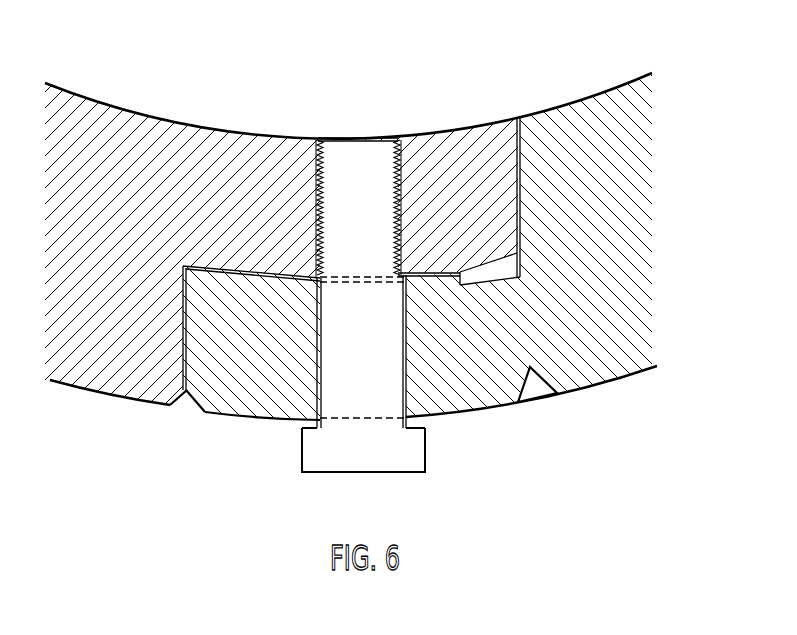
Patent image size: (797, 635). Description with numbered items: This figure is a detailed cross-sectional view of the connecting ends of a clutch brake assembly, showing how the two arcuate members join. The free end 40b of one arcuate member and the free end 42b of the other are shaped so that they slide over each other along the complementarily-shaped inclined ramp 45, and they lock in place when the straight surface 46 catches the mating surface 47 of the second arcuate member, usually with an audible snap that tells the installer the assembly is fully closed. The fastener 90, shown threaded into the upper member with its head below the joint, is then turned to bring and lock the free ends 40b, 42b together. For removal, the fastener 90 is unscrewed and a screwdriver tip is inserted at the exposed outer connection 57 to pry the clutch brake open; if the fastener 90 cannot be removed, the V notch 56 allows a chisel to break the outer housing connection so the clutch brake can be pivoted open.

The free end of arcuate member 40b is at (433, 150).
The free end of arcuate member 42b is at (230, 398).
The ramp 45 is at (458, 280).
The straight surface 46 is at (463, 273).
The surface 47 is at (453, 278).
The V notch 56 is at (541, 405).
The exposed outer connection 57 is at (183, 415).
The fastener 90 is at (314, 450).